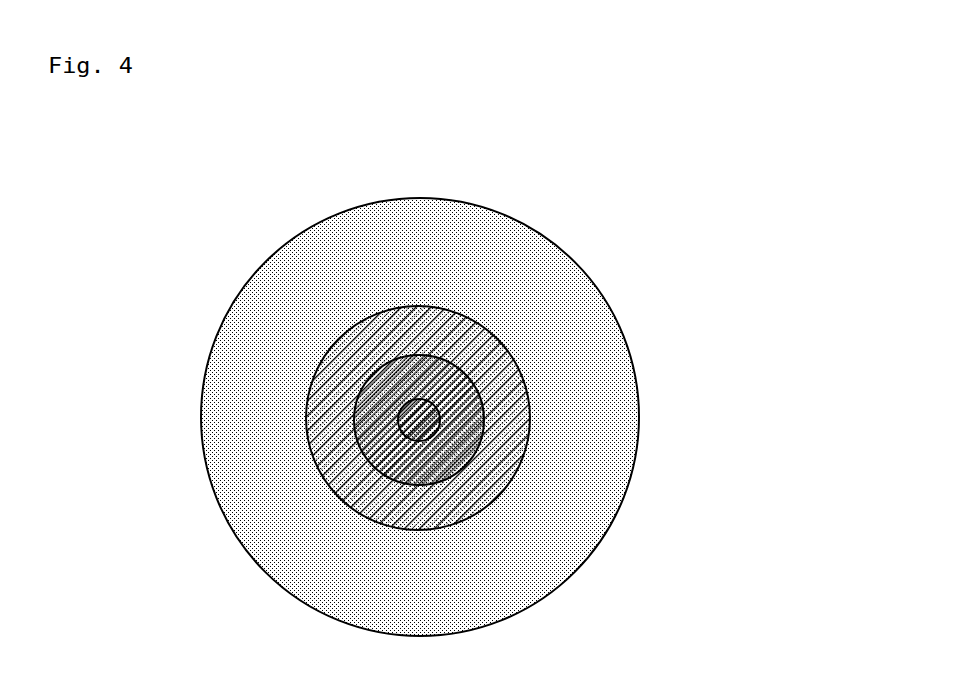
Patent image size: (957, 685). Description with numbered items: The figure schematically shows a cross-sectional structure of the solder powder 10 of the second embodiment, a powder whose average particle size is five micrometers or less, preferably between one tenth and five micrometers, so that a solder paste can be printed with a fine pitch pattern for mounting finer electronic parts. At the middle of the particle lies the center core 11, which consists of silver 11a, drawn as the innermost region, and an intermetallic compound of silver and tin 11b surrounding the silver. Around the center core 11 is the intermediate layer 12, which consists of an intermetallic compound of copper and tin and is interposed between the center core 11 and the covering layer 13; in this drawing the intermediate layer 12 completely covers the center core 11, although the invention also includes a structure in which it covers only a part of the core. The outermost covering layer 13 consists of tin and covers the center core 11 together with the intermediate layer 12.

The solder powder 10 is at (137, 170).
The center core 11 is at (773, 397).
The silver 11a is at (432, 404).
The intermetallic compound of silver and tin 11b is at (467, 443).
The intermediate layer 12 is at (478, 473).
The covering layer 13 is at (553, 550).